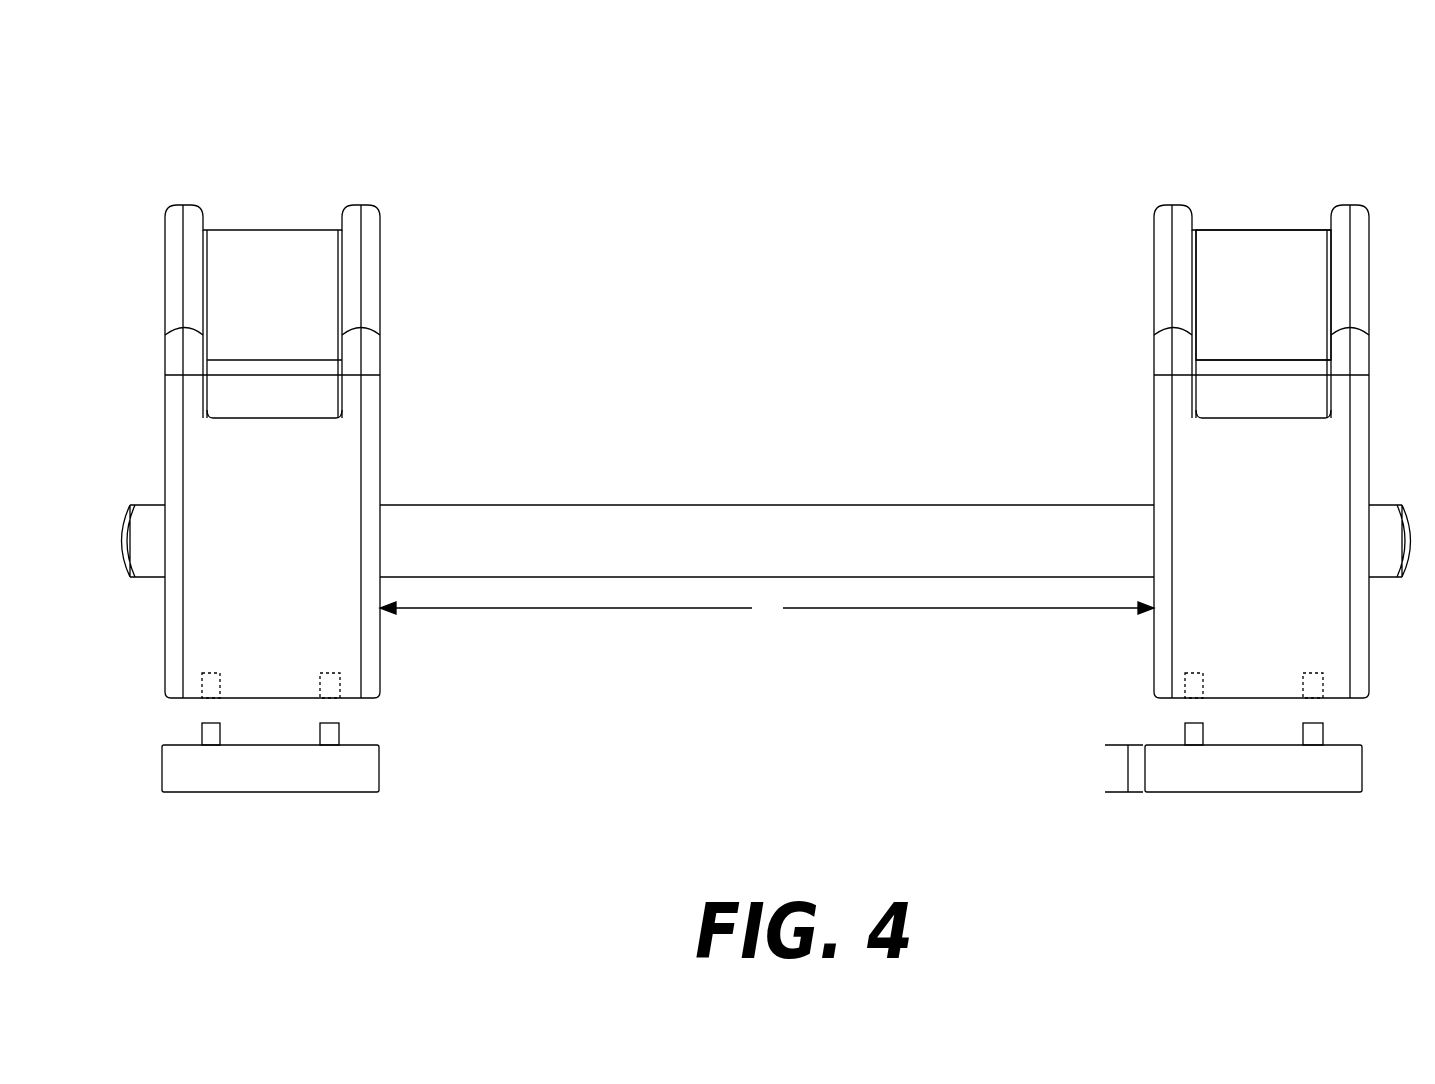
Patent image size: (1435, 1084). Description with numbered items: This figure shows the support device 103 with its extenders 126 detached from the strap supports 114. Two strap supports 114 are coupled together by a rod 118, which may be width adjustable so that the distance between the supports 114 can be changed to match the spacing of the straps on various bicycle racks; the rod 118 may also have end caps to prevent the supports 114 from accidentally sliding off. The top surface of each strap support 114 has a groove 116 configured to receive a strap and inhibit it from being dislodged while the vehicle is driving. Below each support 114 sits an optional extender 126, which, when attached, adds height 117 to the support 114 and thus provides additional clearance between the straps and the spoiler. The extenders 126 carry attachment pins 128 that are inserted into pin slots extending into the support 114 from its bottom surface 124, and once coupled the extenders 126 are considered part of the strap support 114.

The support device 103 is at (538, 130).
The strap support 114 is at (318, 449).
The groove 116 is at (1265, 303).
The height 117 is at (1128, 765).
The rod 118 is at (785, 522).
The bottom surface 124 is at (331, 683).
The extenders 126 is at (273, 792).
The attachment pins 128 is at (331, 732).